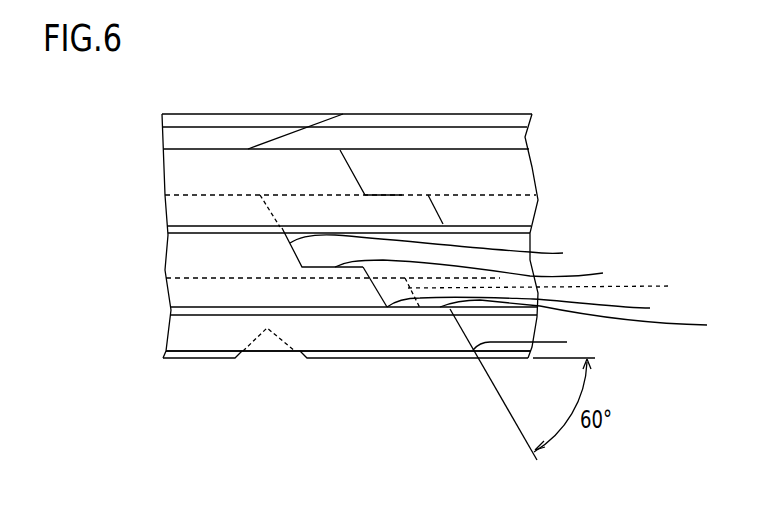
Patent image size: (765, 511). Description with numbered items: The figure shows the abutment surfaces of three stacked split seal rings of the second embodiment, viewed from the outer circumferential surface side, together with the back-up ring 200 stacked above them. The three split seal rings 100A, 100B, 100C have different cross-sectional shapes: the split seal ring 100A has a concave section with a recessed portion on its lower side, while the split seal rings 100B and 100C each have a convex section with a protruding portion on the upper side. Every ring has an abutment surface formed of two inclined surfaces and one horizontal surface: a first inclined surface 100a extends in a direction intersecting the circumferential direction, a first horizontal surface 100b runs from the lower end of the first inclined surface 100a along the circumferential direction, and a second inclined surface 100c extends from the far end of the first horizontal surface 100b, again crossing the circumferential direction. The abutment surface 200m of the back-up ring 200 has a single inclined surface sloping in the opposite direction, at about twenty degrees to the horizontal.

The back-up ring 200 is at (207, 135).
The abutment surface of back-up ring 200m is at (278, 135).
The split seal ring 100A is at (185, 185).
The split seal ring 100B is at (185, 267).
The split seal ring 100C is at (185, 334).
The first inclined surface 100a is at (360, 177).
The first horizontal surface 100b is at (409, 194).
The second inclined surface 100c is at (441, 224).